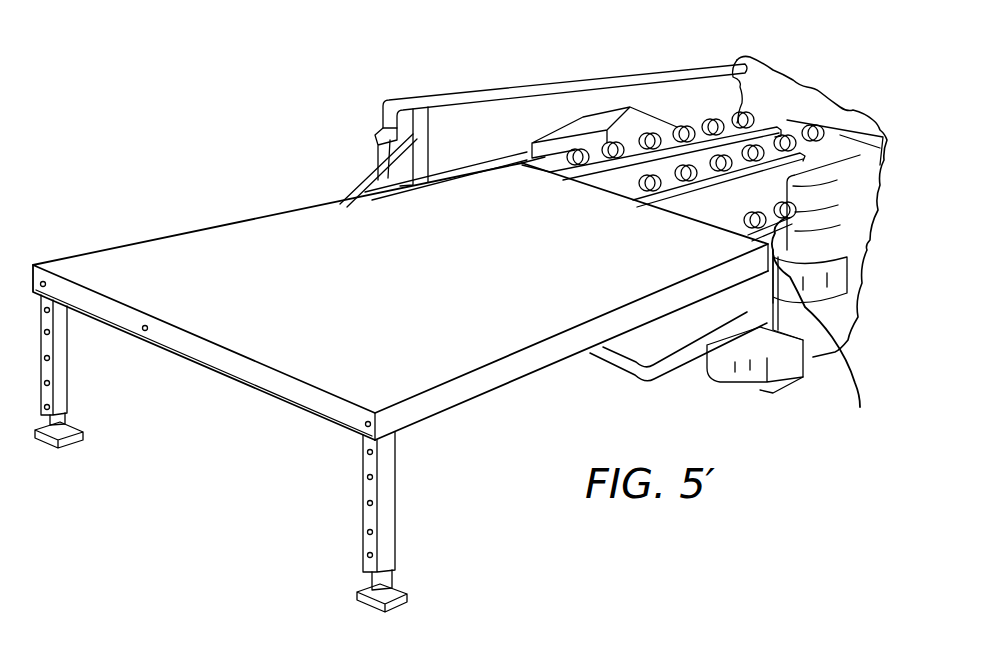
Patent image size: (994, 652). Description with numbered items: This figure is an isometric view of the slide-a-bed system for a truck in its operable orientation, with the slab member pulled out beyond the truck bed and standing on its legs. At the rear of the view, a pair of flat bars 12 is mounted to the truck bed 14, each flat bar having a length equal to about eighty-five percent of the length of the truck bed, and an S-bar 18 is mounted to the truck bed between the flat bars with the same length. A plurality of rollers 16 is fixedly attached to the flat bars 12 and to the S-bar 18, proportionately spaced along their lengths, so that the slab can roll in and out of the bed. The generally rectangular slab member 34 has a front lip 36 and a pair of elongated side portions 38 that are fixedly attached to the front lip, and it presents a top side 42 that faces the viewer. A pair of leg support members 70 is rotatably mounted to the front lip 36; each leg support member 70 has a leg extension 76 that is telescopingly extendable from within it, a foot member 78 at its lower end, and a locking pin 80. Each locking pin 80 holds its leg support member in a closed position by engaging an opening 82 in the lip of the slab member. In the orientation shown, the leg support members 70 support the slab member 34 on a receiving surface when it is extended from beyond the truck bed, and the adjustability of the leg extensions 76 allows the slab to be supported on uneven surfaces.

The flat bar 12 is at (772, 127).
The truck bed 14 is at (693, 127).
The rollers 16 is at (812, 128).
The S-bar 18 is at (850, 137).
The slab member 34 is at (163, 240).
The front lip 36 is at (203, 360).
The elongated side portions 38 is at (423, 413).
The top side 42 is at (318, 372).
The leg support members 70 is at (60, 382).
The leg extension 76 is at (360, 590).
The foot member 78 is at (395, 594).
The locking pin 80 is at (366, 532).
The opening 82 is at (145, 331).